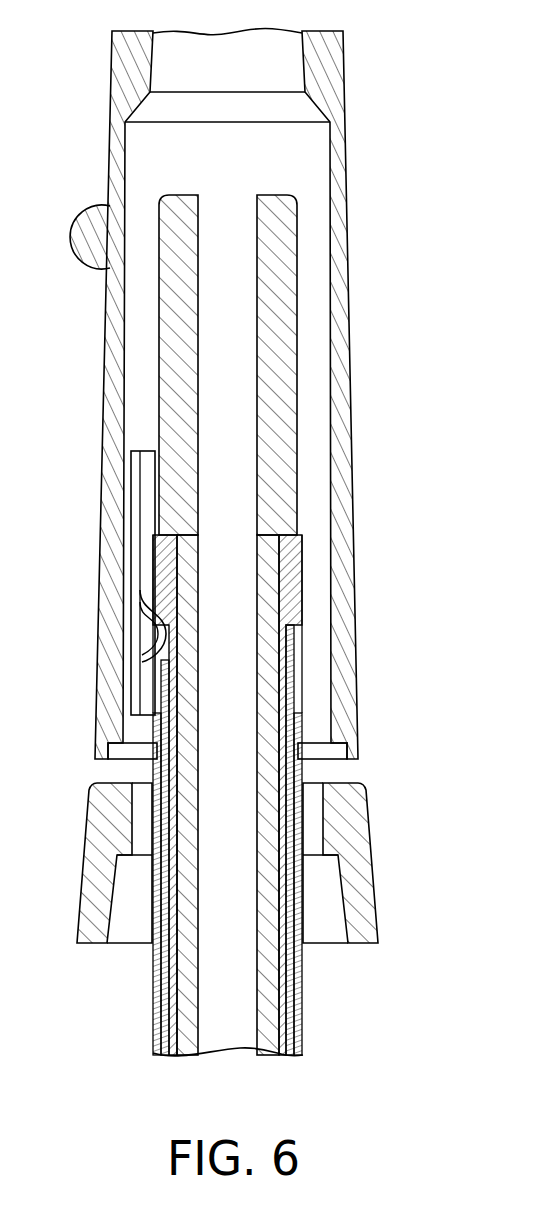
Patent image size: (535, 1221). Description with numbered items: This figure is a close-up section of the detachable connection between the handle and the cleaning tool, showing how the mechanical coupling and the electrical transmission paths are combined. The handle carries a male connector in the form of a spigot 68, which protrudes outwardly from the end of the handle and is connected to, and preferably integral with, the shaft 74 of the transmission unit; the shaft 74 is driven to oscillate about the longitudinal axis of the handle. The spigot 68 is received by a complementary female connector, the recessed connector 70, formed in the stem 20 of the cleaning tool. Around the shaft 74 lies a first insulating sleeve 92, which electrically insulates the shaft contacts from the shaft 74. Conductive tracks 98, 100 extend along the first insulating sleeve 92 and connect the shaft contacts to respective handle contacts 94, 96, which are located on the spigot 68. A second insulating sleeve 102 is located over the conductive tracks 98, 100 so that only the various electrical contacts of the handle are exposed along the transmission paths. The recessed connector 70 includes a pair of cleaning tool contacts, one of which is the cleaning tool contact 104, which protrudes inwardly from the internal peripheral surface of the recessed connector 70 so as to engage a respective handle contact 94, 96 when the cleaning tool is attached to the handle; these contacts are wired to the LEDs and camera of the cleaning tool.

The stem 20 is at (128, 57).
The recessed connector 70 is at (315, 168).
The spigot 68 is at (282, 412).
The first insulating sleeve 92 is at (278, 968).
The handle contact 94 is at (163, 686).
The handle contact 96 is at (294, 684).
The conductive track 98 is at (160, 912).
The conductive track 100 is at (290, 800).
The second insulating sleeve 102 is at (300, 1032).
The cleaning tool contact 104 is at (146, 636).
The shaft 74 is at (270, 1047).